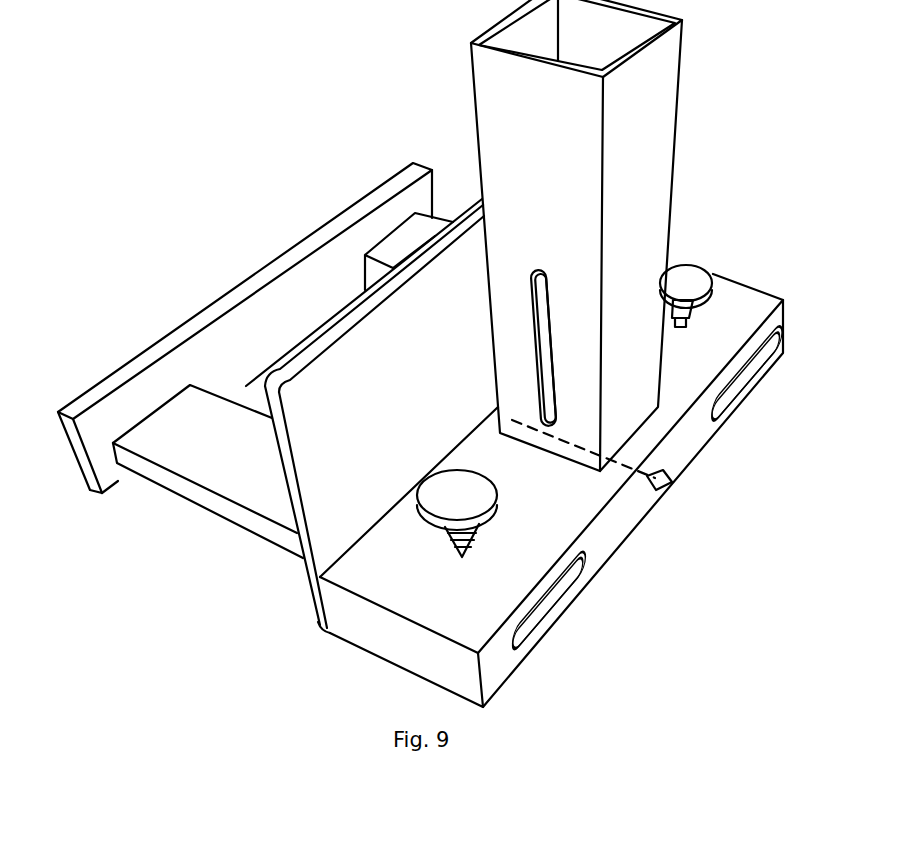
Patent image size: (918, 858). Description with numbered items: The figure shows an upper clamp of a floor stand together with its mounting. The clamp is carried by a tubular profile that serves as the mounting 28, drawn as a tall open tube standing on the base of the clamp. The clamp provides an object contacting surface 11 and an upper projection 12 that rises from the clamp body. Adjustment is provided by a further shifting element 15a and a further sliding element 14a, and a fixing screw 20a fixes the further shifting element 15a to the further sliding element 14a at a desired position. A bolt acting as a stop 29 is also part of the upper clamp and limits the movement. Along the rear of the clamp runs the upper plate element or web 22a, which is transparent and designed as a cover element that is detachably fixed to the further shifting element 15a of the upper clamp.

The object contacting surface 11 is at (197, 442).
The upper projection 12 is at (285, 327).
The further sliding element 14a is at (400, 635).
The further shifting element 15a is at (238, 508).
The fixing screw 20a is at (455, 493).
The upper plate element or web 22a is at (310, 240).
The tubular profile as mounting 28 is at (642, 192).
The bolt as stop 29 is at (662, 490).